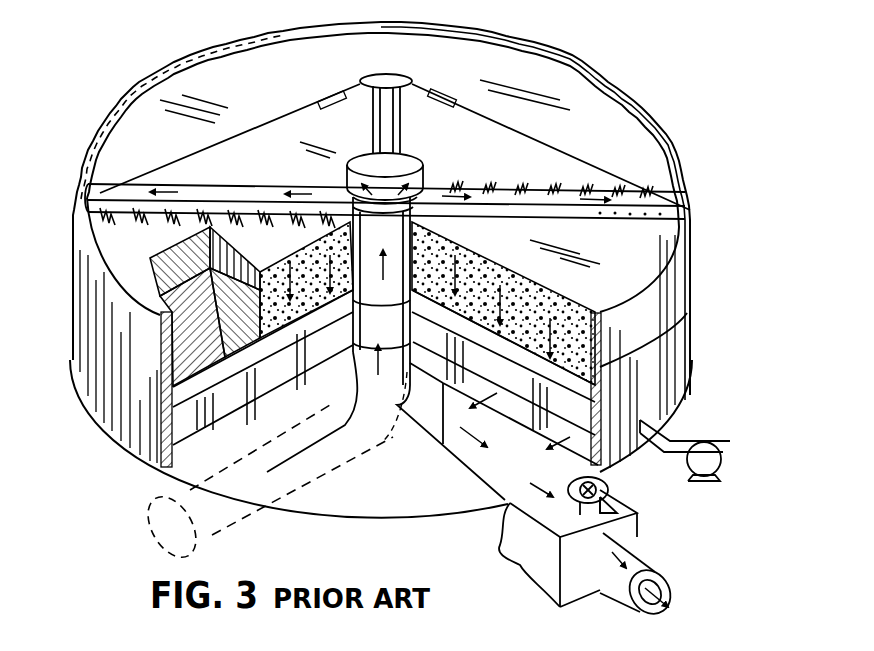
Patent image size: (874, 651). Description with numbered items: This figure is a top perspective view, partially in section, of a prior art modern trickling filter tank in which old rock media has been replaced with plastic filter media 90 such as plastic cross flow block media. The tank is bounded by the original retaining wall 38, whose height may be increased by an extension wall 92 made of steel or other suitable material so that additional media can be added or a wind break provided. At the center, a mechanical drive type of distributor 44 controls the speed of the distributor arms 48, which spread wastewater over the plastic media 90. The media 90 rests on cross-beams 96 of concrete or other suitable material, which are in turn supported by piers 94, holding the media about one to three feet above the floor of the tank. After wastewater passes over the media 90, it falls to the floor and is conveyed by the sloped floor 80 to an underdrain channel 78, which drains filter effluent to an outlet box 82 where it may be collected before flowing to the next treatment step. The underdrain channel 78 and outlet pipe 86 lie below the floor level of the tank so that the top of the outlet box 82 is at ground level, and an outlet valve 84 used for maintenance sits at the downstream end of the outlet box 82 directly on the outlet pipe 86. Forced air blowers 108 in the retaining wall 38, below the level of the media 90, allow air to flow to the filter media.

The retaining wall 38 is at (120, 420).
The mechanical drive type of distributor 44 is at (410, 160).
The distributor arms 48 is at (245, 194).
The underdrain channel 78 is at (493, 457).
The sloped floor 80 is at (363, 503).
The outlet box 82 is at (533, 553).
The outlet valve 84 is at (610, 480).
The outlet pipe 86 is at (647, 553).
The plastic filter media 90 is at (146, 274).
The extension wall 92 is at (127, 307).
The piers 94 is at (223, 417).
The cross-beams 96 is at (258, 352).
The forced air blowers 108 is at (703, 440).